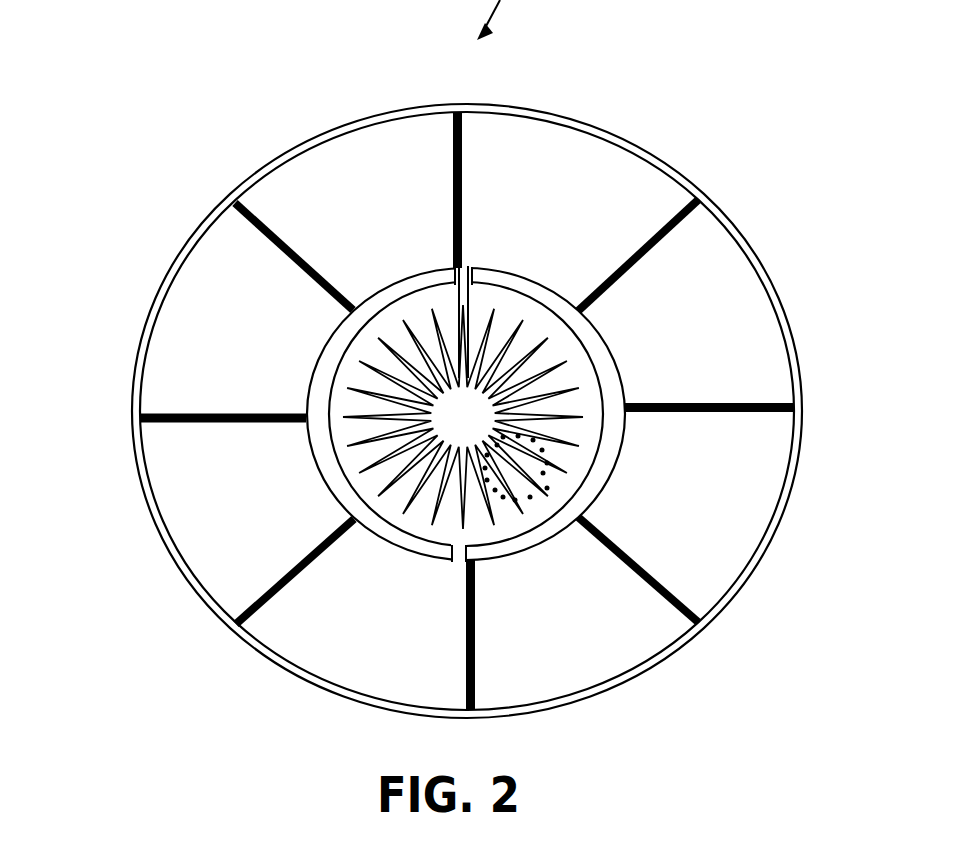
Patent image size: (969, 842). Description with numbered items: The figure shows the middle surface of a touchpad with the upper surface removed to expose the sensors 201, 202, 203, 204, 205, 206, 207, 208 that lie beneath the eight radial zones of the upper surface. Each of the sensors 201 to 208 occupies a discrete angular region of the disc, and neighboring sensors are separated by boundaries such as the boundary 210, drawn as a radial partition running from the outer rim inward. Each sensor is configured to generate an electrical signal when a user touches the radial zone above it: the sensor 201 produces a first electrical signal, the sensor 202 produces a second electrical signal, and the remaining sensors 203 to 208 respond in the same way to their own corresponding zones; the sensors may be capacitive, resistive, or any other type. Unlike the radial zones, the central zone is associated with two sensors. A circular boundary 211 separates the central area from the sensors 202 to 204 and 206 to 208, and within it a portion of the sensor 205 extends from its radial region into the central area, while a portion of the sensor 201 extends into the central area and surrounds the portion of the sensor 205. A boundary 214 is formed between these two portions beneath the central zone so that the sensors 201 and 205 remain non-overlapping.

The sensor 201 is at (347, 647).
The sensor 202 is at (553, 662).
The sensor 203 is at (755, 457).
The sensor 204 is at (710, 287).
The sensor 205 is at (482, 430).
The sensor 206 is at (348, 168).
The sensor 207 is at (190, 342).
The sensor 208 is at (227, 548).
The boundary 210 is at (453, 140).
The boundary 211 is at (605, 377).
The boundary 214 is at (556, 470).